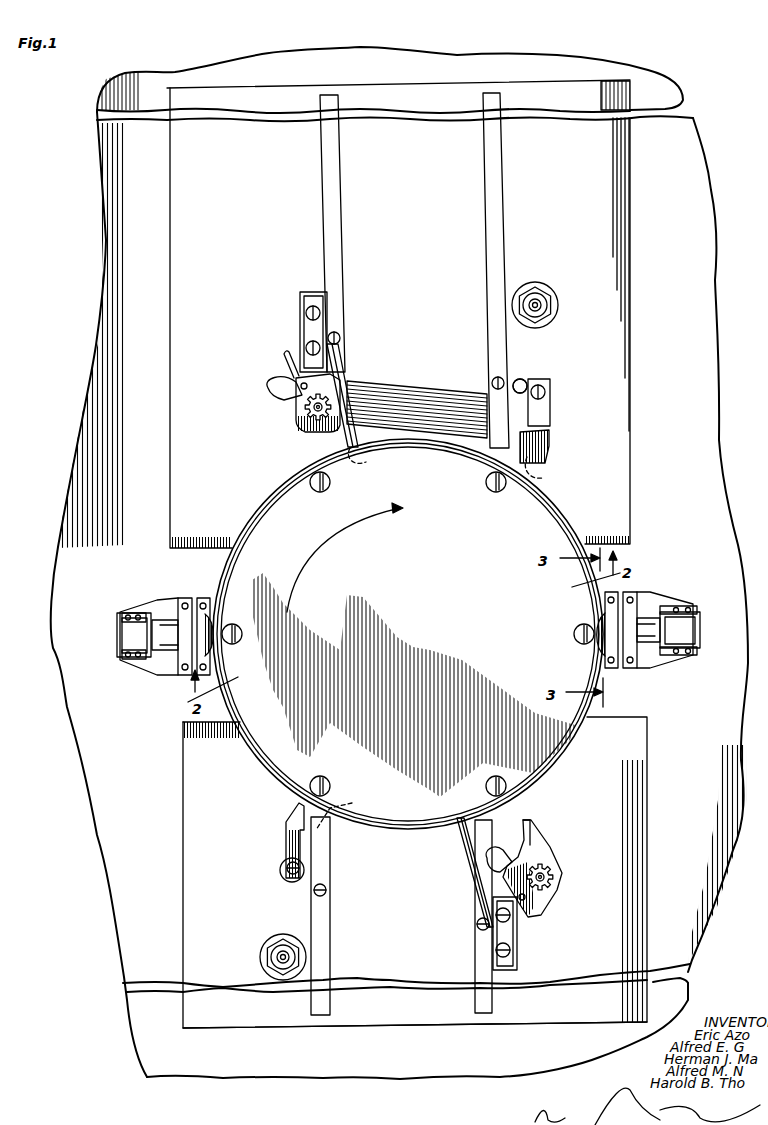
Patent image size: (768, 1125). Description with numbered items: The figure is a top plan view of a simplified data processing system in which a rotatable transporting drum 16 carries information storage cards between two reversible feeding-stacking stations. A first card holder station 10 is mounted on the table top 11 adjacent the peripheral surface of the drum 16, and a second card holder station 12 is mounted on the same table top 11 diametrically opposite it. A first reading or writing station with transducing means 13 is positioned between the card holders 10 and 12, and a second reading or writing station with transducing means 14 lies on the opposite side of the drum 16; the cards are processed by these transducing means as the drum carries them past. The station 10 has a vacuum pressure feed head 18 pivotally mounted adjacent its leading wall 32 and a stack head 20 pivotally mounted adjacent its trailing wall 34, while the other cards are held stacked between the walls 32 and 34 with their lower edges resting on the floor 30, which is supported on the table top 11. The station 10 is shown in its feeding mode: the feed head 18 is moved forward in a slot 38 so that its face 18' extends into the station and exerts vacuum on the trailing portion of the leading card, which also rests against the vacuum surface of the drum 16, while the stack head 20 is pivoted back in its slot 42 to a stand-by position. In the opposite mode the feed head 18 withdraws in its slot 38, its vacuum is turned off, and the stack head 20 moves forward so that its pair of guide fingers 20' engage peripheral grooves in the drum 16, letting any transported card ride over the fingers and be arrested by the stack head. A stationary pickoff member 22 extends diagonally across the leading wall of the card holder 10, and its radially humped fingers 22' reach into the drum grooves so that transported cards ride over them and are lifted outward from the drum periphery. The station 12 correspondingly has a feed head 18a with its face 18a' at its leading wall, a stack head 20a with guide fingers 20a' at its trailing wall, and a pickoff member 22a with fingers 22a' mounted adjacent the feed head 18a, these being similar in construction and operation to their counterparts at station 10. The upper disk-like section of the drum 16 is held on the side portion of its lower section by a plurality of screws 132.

The first card holder station 10 is at (438, 132).
The table top 11 is at (145, 277).
The second card holder station 12 is at (373, 960).
The transducing means 13 is at (673, 588).
The transducing means 14 is at (150, 677).
The drum 16 is at (493, 604).
The vacuum pressure feed head 18 is at (292, 406).
The surface of feed head 18' is at (417, 421).
The feed head 18a is at (542, 868).
The spring band 18a' is at (556, 819).
The stack head 20 is at (546, 421).
The guide fingers 20' is at (547, 469).
The stack head 20a is at (275, 842).
The catch hook 20a' is at (351, 811).
The stationary pickoff member 22 is at (294, 332).
The fingers 22' is at (355, 408).
The pickoff member 22a is at (529, 933).
The lever arm 22a' is at (465, 855).
The floor 30 is at (200, 223).
The leading wall 32 is at (333, 206).
The trailing wall 34 is at (490, 225).
The slot 38 is at (292, 394).
The slot 42 is at (521, 388).
The screws 132 is at (490, 486).